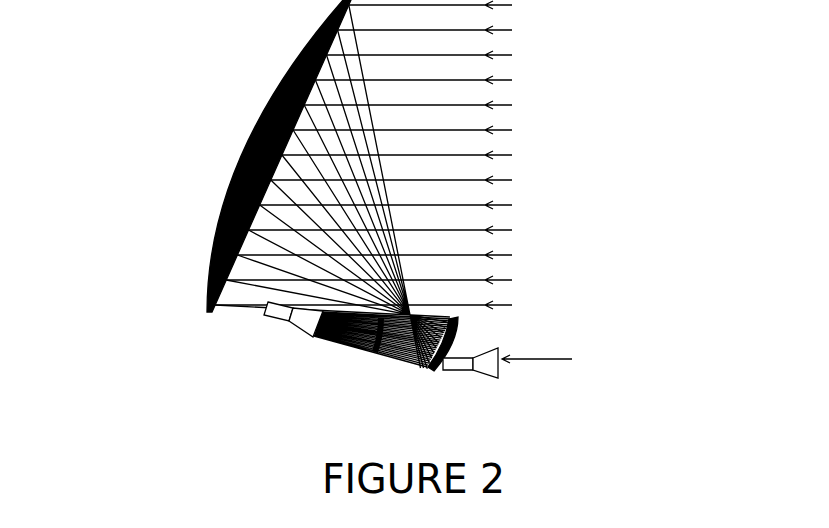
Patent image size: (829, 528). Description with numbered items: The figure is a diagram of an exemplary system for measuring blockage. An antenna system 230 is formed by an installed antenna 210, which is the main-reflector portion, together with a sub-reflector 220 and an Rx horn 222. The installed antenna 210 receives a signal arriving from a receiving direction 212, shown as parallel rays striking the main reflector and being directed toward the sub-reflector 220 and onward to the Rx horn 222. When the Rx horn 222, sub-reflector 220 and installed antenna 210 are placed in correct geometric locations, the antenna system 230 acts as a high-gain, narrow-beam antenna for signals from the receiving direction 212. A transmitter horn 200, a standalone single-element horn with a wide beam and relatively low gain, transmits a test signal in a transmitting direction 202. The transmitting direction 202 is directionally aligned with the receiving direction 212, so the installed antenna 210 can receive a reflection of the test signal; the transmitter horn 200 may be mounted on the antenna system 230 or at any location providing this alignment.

The transmitter horn 200 is at (458, 374).
The transmitting direction 202 is at (672, 359).
The installed antenna 210 is at (281, 82).
The receiving direction 212 is at (553, 140).
The sub-reflector 220 is at (458, 338).
The Rx horn 222 is at (268, 320).
The antenna system 230 is at (182, 196).